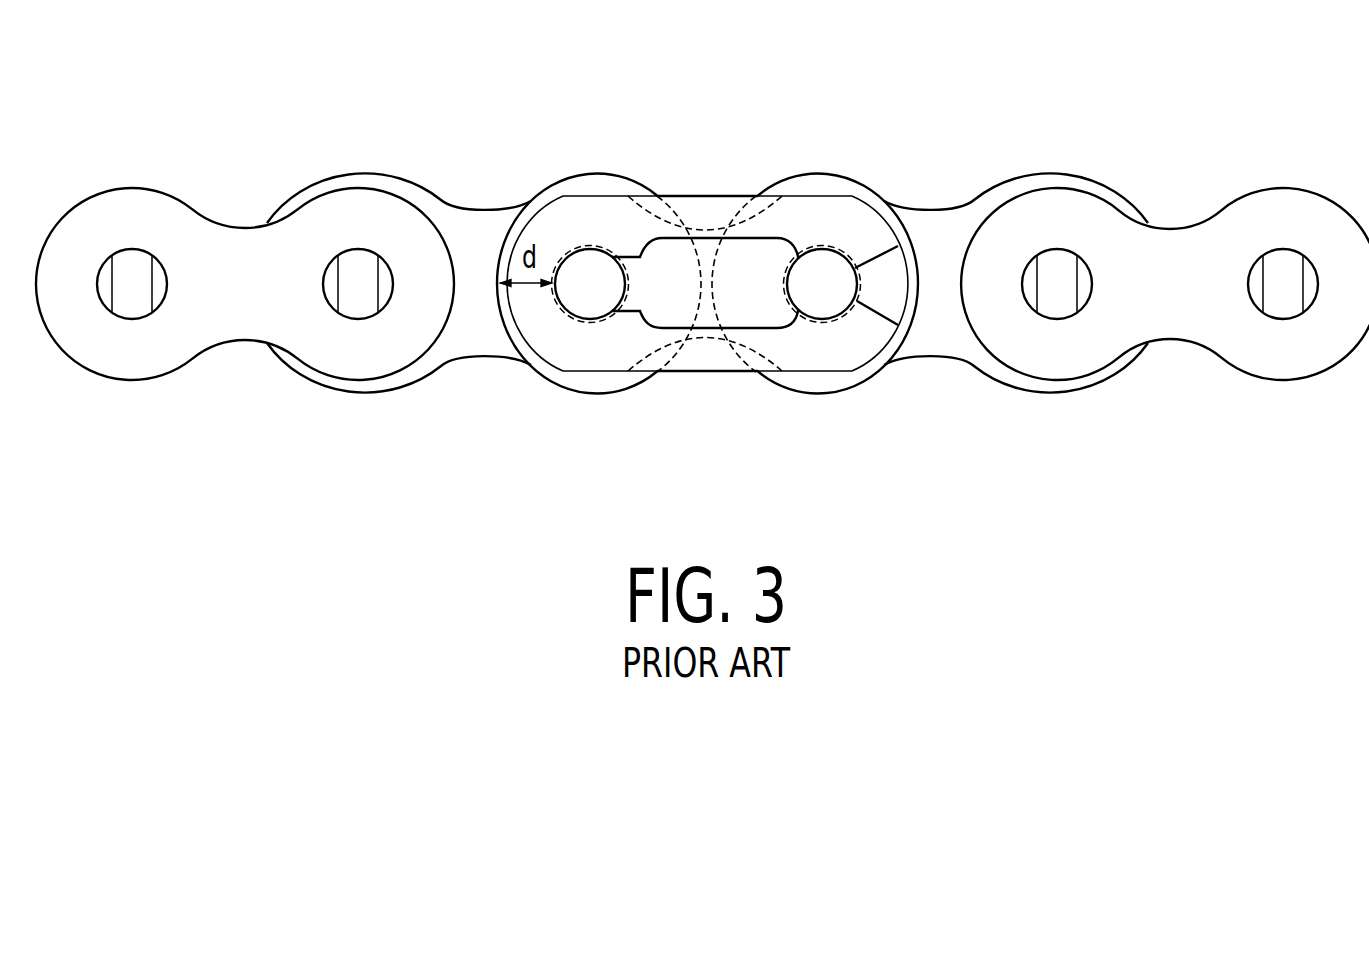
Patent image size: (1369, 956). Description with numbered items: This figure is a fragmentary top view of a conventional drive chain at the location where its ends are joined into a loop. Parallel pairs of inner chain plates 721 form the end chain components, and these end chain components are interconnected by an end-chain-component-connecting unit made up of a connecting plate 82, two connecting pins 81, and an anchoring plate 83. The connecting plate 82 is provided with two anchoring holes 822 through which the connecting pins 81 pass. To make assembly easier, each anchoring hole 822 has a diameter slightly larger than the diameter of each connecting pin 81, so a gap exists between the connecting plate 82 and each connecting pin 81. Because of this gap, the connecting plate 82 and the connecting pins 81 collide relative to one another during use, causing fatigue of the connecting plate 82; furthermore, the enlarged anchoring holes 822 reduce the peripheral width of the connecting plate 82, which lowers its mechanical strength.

The inner chain plates 721 is at (453, 250).
The connecting plate 82 is at (587, 188).
The anchoring plate 83 is at (706, 203).
The connecting pins 81 is at (594, 292).
The anchoring holes 822 is at (572, 318).